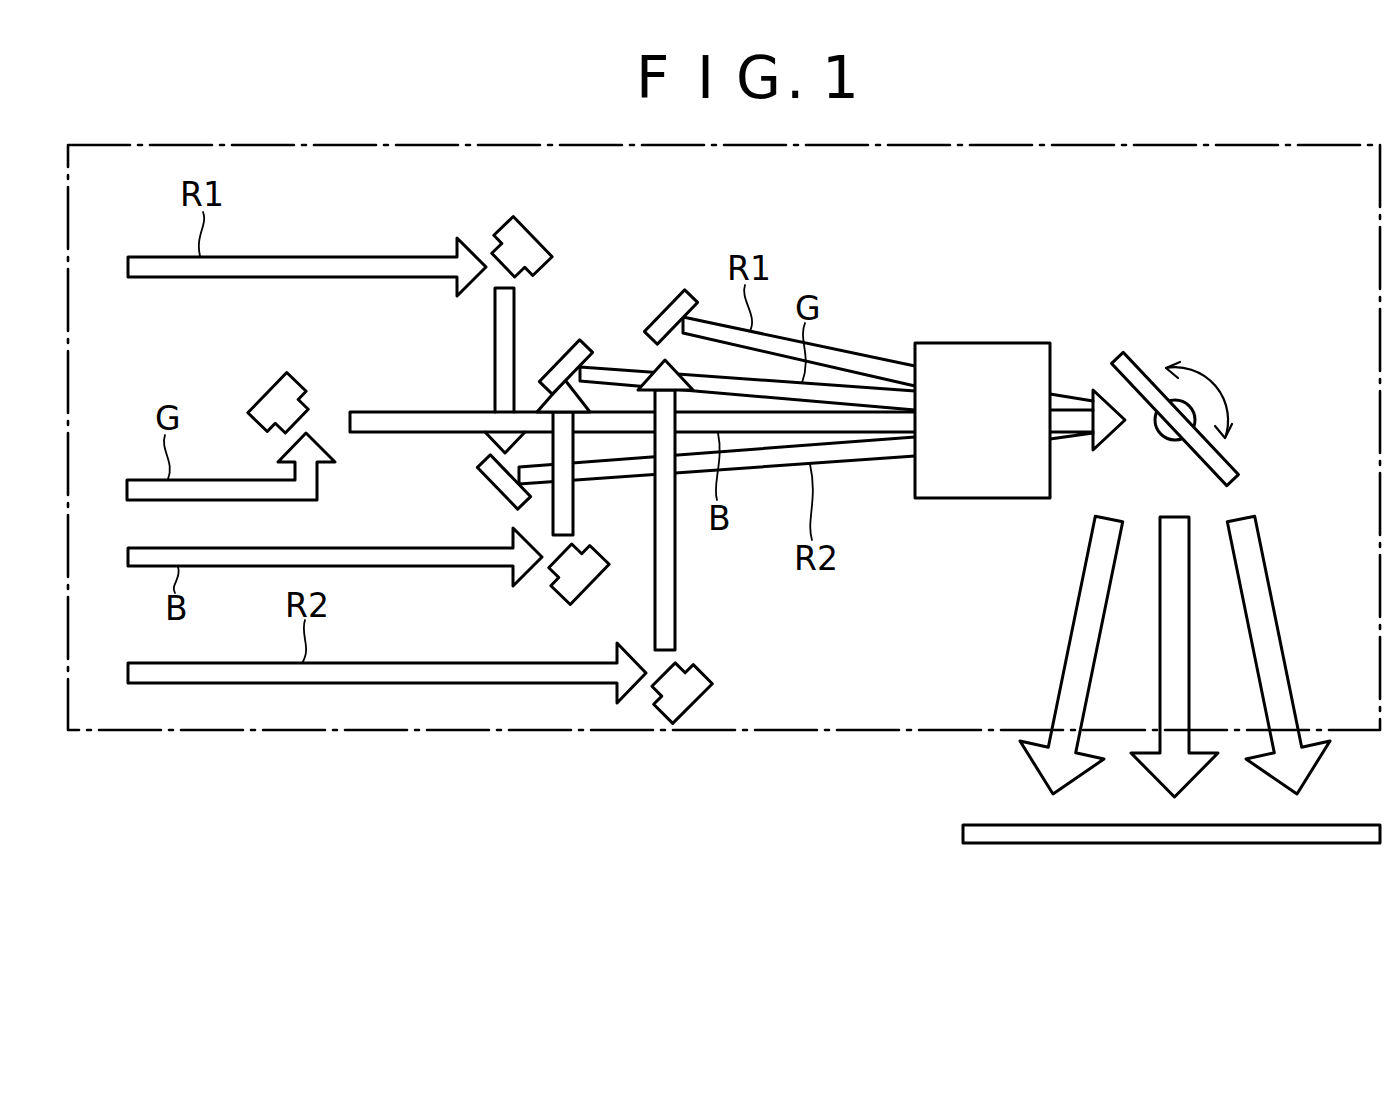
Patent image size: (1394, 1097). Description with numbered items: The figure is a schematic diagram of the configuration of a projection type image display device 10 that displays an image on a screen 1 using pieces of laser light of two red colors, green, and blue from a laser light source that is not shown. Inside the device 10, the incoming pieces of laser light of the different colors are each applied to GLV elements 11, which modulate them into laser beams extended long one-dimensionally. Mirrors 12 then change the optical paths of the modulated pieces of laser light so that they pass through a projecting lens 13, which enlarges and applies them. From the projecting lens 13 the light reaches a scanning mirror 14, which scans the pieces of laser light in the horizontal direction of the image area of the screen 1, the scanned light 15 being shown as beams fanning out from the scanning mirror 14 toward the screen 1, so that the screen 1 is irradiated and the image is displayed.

The screen 1 is at (962, 833).
The projection type image display device 10 is at (432, 735).
The GLV elements 11 is at (530, 232).
The mirrors 12 is at (577, 343).
The projecting lens 13 is at (990, 499).
The scanning mirror 14 is at (1228, 457).
The scanned light beams 15 is at (1064, 665).